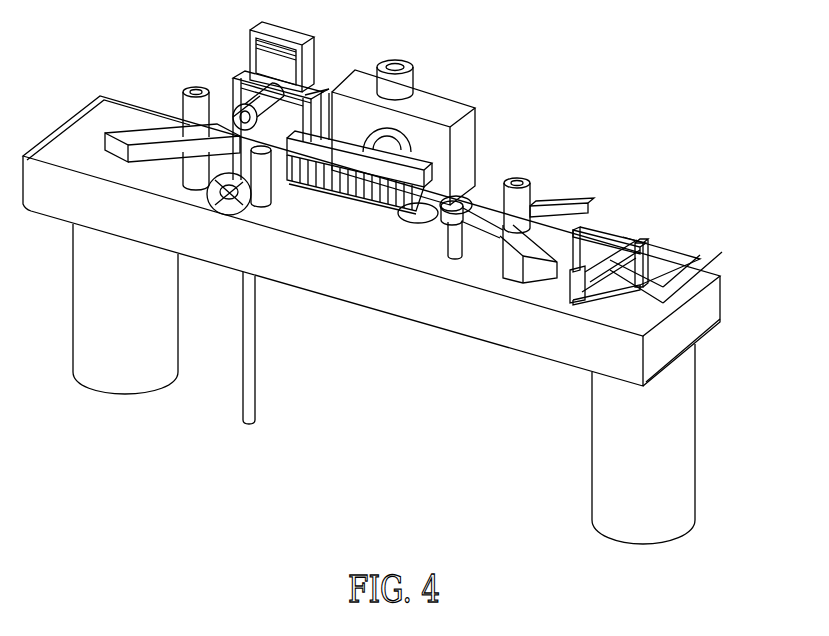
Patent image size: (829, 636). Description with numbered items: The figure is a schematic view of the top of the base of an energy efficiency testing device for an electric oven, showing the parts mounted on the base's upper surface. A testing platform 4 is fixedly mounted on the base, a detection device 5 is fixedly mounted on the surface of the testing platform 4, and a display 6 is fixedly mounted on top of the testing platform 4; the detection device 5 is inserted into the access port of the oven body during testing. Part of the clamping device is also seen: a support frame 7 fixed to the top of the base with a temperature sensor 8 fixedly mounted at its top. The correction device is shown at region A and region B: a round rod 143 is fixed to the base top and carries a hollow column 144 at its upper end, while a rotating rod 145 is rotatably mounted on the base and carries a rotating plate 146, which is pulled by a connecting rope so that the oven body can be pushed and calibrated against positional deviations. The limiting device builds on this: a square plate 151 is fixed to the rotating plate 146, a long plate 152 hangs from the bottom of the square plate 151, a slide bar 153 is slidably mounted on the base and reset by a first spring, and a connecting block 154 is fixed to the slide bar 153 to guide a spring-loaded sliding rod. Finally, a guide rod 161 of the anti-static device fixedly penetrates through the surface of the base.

The swing arm region B is at (187, 133).
The rack region A is at (434, 183).
The testing platform 4 is at (246, 90).
The detection device 5 is at (240, 126).
The display 6 is at (288, 66).
The support frame 7 is at (440, 112).
The temperature sensor 8 is at (404, 67).
The round rod 143 is at (453, 252).
The hollow column 144 is at (460, 206).
The rotating rod 145 is at (512, 216).
The rotating plate 146 is at (516, 247).
The square plate 151 is at (586, 216).
The long plate 152 is at (648, 264).
The slide bar 153 is at (627, 281).
The connecting block 154 is at (622, 262).
The guide rod 161 is at (248, 376).